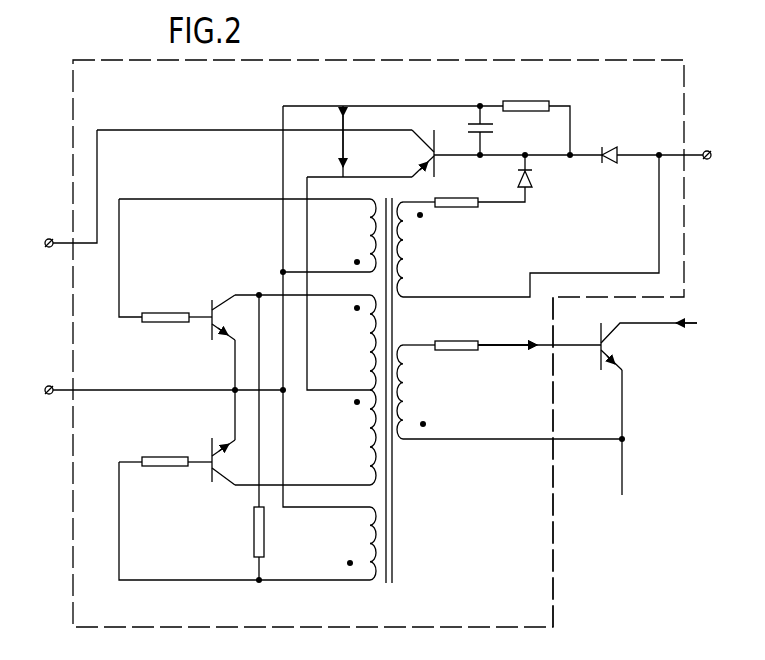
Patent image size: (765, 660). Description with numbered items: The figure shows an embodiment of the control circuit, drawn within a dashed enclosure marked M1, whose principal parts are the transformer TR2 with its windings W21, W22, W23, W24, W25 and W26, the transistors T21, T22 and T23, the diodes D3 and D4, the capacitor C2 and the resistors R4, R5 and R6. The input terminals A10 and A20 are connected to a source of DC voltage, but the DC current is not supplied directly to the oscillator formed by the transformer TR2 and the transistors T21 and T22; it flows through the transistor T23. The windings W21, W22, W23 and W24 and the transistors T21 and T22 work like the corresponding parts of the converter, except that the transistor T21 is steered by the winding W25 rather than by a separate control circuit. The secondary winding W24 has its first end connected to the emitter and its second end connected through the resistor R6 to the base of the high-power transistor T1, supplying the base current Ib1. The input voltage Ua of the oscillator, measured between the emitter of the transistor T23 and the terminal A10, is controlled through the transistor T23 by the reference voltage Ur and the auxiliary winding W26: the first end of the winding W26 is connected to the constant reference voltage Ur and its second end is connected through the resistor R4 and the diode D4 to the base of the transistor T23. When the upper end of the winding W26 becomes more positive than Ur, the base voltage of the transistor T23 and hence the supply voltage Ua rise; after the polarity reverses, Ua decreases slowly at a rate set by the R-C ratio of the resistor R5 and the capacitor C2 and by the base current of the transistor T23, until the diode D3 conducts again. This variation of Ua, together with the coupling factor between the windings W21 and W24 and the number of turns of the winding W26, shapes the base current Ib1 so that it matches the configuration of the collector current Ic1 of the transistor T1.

The input terminal A20 is at (50, 229).
The input terminal A10 is at (47, 397).
The input voltage of the oscillator Ua is at (344, 141).
The transistor T23 is at (436, 179).
The resistor R5 is at (526, 95).
The capacitor C2 is at (493, 130).
The diode D4 is at (537, 178).
The diode D3 is at (613, 174).
The reference voltage Ur is at (720, 155).
The resistor R4 is at (456, 215).
The resistor R6 is at (456, 359).
The winding W25 is at (353, 235).
The winding W21 is at (353, 342).
The winding W22 is at (353, 437).
The winding W23 is at (353, 543).
The auxiliary winding W26 is at (422, 249).
The secondary winding W24 is at (422, 392).
The transformer TR2 is at (410, 390).
The transistor T21 is at (210, 301).
The transistor T22 is at (208, 482).
The high-power transistor T1 is at (598, 358).
The base current Ib1 is at (512, 331).
The collector current Ic1 is at (683, 338).
The module M1 is at (544, 589).